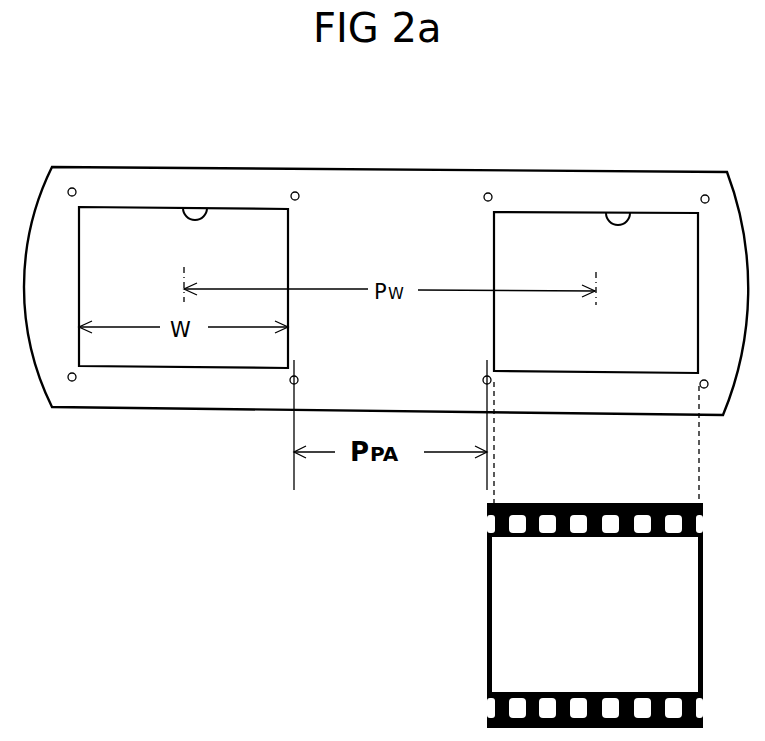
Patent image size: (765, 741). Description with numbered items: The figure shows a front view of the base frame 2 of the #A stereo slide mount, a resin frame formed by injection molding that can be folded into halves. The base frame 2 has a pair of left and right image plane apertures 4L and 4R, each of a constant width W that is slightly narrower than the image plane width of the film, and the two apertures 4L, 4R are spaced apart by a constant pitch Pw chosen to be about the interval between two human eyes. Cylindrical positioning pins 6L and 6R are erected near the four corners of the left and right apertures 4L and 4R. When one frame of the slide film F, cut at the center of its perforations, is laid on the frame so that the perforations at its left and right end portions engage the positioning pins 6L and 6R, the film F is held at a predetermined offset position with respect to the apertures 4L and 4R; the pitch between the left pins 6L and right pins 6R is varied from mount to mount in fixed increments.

The base frame 2 is at (371, 151).
The left aperture 4L is at (186, 216).
The right aperture 4R is at (612, 220).
The left positioning pins 6L is at (72, 188).
The right positioning pins 6R is at (488, 193).
The slide film F is at (490, 577).